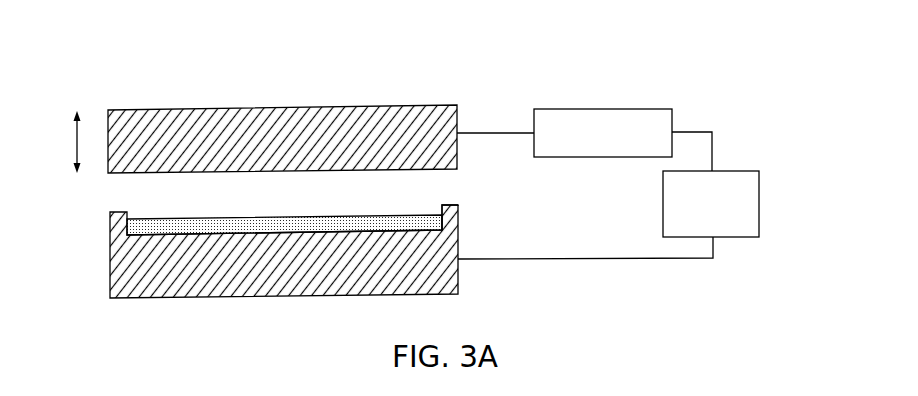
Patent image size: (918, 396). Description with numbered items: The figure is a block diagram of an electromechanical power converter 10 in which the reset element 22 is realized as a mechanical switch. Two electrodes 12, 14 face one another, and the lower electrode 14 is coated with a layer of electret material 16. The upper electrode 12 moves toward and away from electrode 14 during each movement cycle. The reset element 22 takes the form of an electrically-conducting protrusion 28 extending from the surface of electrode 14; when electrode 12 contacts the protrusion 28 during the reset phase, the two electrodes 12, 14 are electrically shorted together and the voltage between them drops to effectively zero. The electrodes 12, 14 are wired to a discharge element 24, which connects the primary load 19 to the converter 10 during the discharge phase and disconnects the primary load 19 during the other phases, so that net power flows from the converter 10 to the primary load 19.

The electromechanical power converter 10 is at (122, 58).
The electrode 12 is at (280, 108).
The electrode 14 is at (110, 258).
The layer of electret material 16 is at (285, 218).
The primary load 19 is at (663, 204).
The reset element 22 is at (468, 196).
The discharge element 24 is at (603, 108).
The electrically-conducting protrusion 28 is at (458, 213).